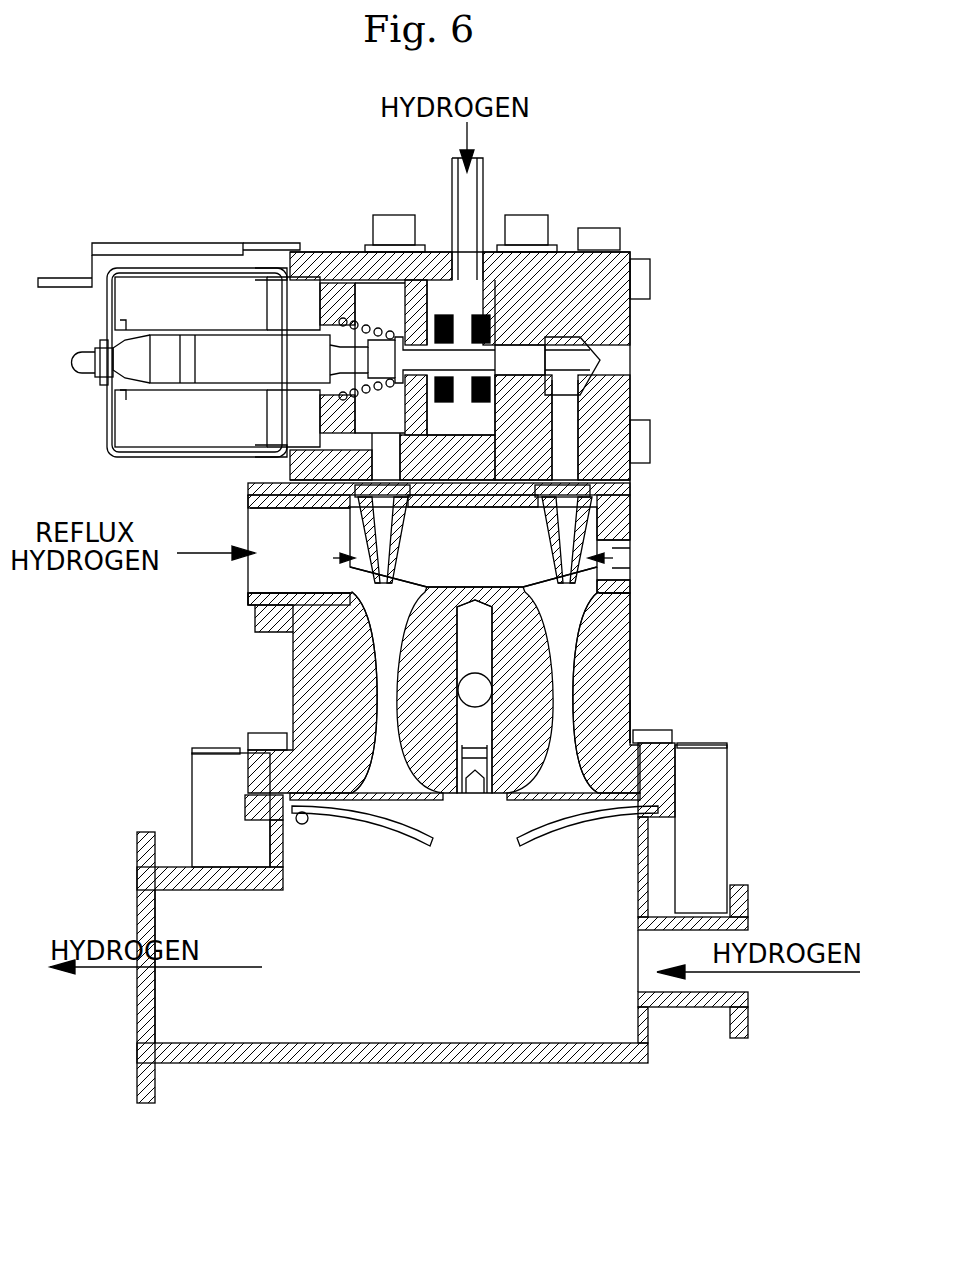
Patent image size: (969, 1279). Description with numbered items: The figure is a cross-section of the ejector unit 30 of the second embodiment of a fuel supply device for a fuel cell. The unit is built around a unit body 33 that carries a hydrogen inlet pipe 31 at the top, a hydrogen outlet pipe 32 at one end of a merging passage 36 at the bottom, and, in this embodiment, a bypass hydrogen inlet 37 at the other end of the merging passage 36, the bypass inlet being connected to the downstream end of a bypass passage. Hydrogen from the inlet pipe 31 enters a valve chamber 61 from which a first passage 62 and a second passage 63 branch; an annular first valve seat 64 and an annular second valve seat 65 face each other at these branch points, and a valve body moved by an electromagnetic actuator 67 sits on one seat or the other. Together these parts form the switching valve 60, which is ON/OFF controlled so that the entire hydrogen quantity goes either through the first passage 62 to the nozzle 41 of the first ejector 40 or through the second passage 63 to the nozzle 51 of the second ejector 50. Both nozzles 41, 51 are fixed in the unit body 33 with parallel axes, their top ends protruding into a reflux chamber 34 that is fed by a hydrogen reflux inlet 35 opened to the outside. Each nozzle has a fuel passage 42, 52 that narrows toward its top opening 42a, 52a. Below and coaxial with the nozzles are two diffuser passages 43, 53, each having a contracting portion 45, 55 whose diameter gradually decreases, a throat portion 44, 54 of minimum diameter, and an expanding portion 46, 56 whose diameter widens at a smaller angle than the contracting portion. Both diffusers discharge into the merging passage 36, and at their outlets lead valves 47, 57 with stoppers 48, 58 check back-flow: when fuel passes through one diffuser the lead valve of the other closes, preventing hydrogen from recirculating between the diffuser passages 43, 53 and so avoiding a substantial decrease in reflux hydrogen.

The ejector unit 30 is at (178, 215).
The hydrogen inlet pipe 31 is at (483, 190).
The hydrogen outlet pipe 32 is at (137, 1070).
The unit body 33 is at (300, 692).
The reflux chamber 34 is at (600, 480).
The hydrogen reflux inlet 35 is at (245, 570).
The merging passage 36 is at (450, 982).
The bypass hydrogen inlet 37 is at (760, 980).
The first ejector 40 is at (620, 557).
The nozzle 41 is at (600, 528).
The fuel passage 42 is at (600, 582).
The top opening 42a is at (600, 614).
The diffuser passage 43 is at (620, 720).
The throat portion 44 is at (600, 672).
The contracting portion 45 is at (600, 640).
The expanding portion 46 is at (630, 782).
The lead valve 47 is at (480, 800).
The stopper 48 is at (570, 812).
The second ejector 50 is at (252, 568).
The nozzle 51 is at (300, 530).
The fuel passage 52 is at (400, 545).
The top opening 52a is at (410, 580).
The diffuser passage 53 is at (375, 722).
The throat portion 54 is at (385, 668).
The contracting portion 55 is at (300, 625).
The expansion portion 56 is at (293, 772).
The lead valve 57 is at (425, 805).
The stopper 58 is at (378, 815).
The switching valve 60 is at (400, 300).
The valve chamber 61 is at (437, 290).
The first passage 62 is at (600, 398).
The second passage 63 is at (255, 484).
The first valve seat 64 is at (598, 318).
The second valve seat 65 is at (350, 300).
The electromagnetic actuator 67 is at (107, 422).